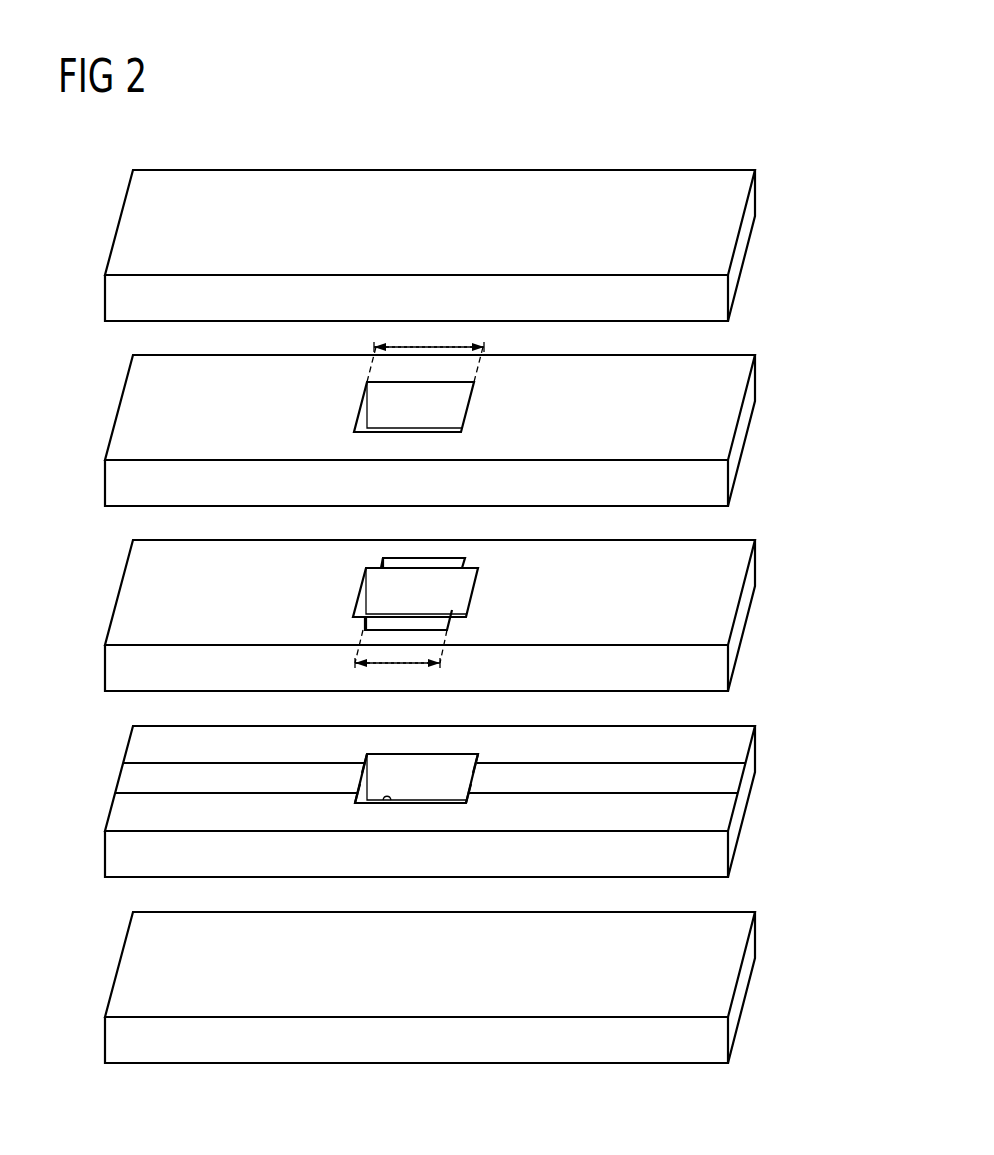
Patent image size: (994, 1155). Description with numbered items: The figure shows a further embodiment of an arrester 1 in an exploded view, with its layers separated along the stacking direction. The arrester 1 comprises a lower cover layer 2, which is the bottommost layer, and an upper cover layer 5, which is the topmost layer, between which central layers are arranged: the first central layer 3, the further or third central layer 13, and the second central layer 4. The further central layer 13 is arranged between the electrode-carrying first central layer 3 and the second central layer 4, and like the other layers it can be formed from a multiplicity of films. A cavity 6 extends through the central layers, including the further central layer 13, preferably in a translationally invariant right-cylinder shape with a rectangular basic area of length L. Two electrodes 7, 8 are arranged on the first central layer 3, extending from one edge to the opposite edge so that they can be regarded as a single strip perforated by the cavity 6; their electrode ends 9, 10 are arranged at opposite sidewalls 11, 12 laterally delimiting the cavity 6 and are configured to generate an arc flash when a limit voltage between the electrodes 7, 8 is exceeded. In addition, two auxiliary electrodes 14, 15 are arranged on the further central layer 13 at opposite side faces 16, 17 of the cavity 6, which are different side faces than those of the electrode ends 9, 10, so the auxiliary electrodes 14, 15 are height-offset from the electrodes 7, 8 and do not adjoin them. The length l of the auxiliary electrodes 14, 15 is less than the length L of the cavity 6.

The arrester 1 is at (698, 129).
The lower cover layer 2 is at (723, 996).
The first central layer 3 is at (723, 809).
The second central layer 4 is at (720, 436).
The upper cover layer 5 is at (720, 251).
The cavity 6 is at (455, 405).
The electrode 7 is at (130, 777).
The electrode 8 is at (737, 772).
The electrode end 9 is at (365, 766).
The electrode end 10 is at (477, 766).
The sidewall 11 is at (358, 802).
The sidewall 12 is at (460, 783).
The further central layer 13 is at (722, 619).
The auxiliary electrode 14 is at (360, 615).
The auxiliary electrode 15 is at (386, 554).
The side face 16 is at (455, 618).
The side face 17 is at (452, 560).
The length of the cavity L is at (430, 346).
The length of the auxiliary electrodes l is at (390, 664).